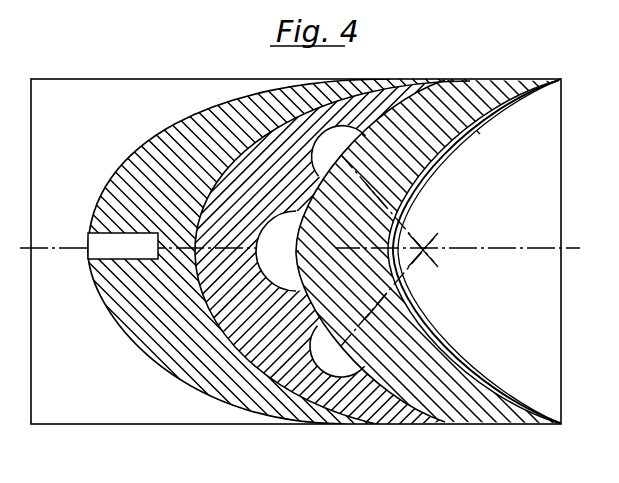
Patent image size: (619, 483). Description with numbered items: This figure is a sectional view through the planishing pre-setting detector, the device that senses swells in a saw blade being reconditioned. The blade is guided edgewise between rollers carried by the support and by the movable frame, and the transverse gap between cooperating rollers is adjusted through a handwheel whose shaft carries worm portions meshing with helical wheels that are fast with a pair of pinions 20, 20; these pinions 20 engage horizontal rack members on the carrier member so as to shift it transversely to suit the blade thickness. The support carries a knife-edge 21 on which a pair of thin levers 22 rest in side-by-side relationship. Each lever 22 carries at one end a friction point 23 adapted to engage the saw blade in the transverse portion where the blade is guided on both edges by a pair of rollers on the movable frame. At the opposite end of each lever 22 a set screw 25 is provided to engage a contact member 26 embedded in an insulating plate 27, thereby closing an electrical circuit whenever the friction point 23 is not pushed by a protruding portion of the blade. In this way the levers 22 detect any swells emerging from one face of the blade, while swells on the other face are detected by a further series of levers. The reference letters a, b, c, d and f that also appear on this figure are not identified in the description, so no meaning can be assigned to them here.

The pinions 20 is at (535, 83).
The knife-edge 21 is at (443, 87).
The thin levers 22 is at (177, 150).
The friction point 23 is at (100, 262).
The set screw 25 is at (342, 369).
The contact member 26 is at (277, 264).
The insulating plate 27 is at (346, 133).
The point a is at (368, 322).
The point b is at (320, 243).
The point c is at (376, 189).
The center point d is at (396, 251).
The shell thickness f is at (478, 133).